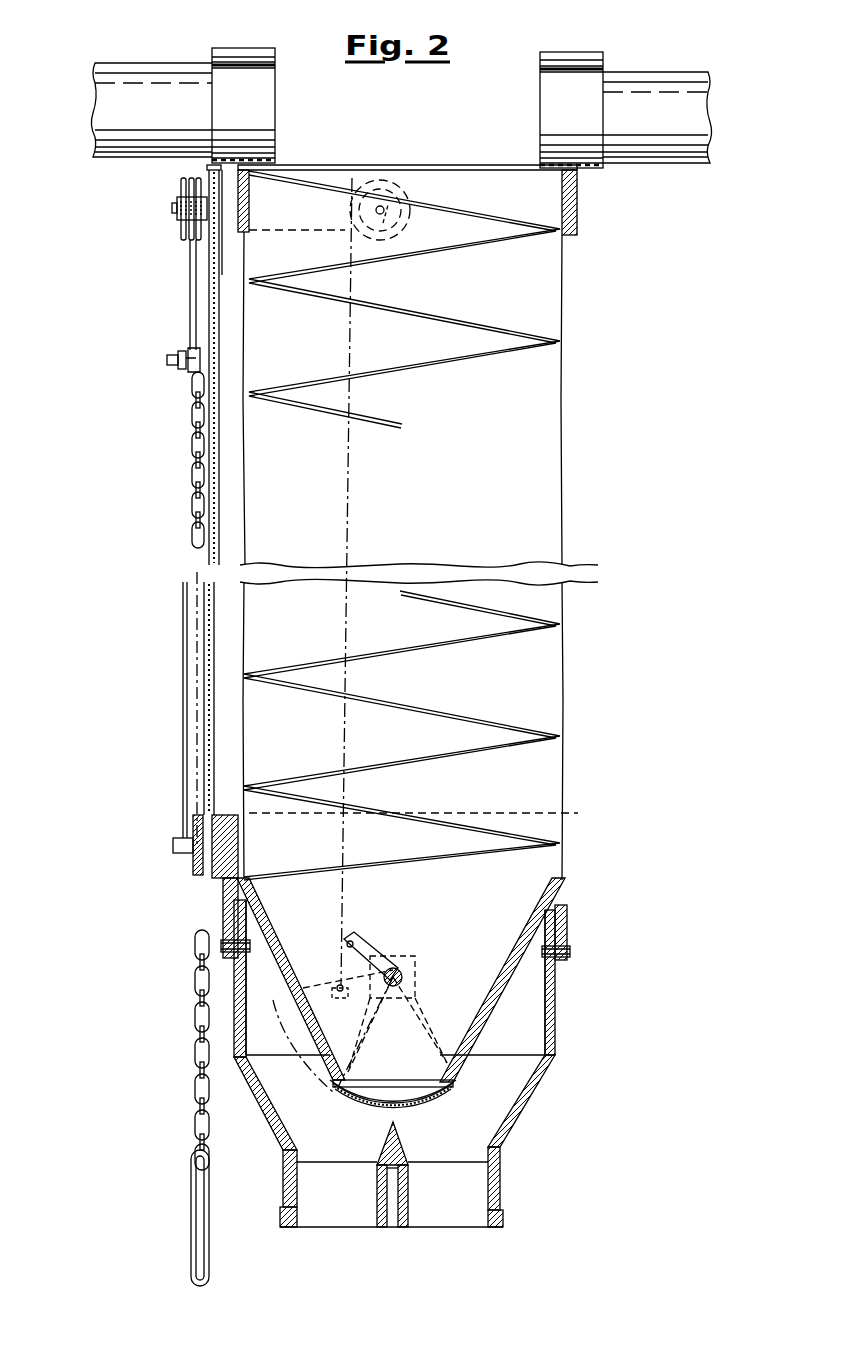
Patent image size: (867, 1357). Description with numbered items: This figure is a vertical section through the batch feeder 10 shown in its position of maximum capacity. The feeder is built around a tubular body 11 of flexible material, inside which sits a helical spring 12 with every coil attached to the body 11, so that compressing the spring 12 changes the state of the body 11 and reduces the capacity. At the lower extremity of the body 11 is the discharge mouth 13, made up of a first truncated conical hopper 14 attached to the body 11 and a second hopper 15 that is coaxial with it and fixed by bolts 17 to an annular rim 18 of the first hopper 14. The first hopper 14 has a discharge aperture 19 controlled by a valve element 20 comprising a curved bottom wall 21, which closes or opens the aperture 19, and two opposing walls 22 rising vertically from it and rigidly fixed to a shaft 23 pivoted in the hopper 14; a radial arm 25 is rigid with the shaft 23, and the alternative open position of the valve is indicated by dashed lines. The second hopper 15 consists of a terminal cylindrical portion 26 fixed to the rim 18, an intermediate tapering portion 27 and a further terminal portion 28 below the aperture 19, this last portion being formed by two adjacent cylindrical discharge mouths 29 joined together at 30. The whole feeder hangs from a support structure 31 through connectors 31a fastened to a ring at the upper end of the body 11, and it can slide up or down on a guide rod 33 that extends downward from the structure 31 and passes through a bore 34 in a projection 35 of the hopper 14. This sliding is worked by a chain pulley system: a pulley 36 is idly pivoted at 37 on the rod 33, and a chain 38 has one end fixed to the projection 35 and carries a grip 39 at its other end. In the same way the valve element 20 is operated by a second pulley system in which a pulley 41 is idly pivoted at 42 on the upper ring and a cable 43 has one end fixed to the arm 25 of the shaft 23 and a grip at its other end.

The batch feeder 10 is at (567, 413).
The tubular body 11 is at (563, 475).
The helical spring 12 is at (512, 637).
The discharge mouth 13 is at (386, 1231).
The first truncated conical hopper 14 is at (495, 998).
The second hopper 15 is at (425, 1087).
The bolts 17 is at (572, 950).
The annular rim 18 is at (567, 923).
The discharge aperture 19 is at (368, 1097).
The valve element 20 is at (272, 1030).
The curved bottom wall 21 is at (380, 1105).
The opposing walls 22 is at (313, 985).
The shaft 23 is at (405, 975).
The radial arm 25 is at (362, 942).
The terminal cylindrical portion 26 is at (557, 1005).
The intermediate tapering portion 27 is at (522, 1108).
The further terminal portion 28 is at (500, 1190).
The cylindrical discharge mouths 29 is at (330, 1215).
The connection 30 is at (394, 1150).
The support structure 31 is at (122, 145).
The connectors 31a is at (268, 114).
The guide rod 33 is at (212, 546).
The bore 34 is at (193, 873).
The projection 35 is at (222, 880).
The pulley 36 is at (185, 233).
The pulley pivot 37 is at (176, 208).
The chain 38 is at (192, 458).
The grip 39 is at (200, 1206).
The pulley 41 is at (403, 190).
The pulley pivot 42 is at (506, 230).
The cable 43 is at (352, 437).